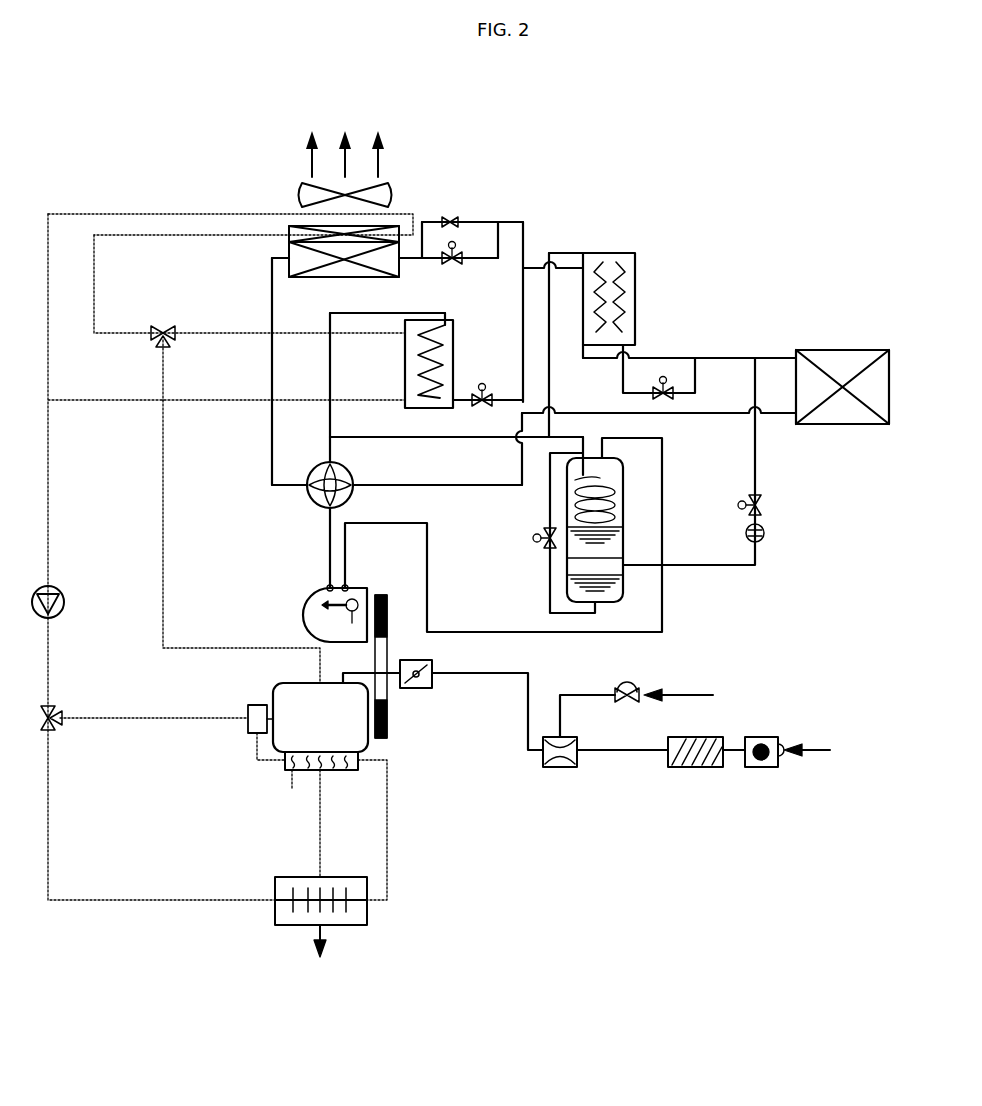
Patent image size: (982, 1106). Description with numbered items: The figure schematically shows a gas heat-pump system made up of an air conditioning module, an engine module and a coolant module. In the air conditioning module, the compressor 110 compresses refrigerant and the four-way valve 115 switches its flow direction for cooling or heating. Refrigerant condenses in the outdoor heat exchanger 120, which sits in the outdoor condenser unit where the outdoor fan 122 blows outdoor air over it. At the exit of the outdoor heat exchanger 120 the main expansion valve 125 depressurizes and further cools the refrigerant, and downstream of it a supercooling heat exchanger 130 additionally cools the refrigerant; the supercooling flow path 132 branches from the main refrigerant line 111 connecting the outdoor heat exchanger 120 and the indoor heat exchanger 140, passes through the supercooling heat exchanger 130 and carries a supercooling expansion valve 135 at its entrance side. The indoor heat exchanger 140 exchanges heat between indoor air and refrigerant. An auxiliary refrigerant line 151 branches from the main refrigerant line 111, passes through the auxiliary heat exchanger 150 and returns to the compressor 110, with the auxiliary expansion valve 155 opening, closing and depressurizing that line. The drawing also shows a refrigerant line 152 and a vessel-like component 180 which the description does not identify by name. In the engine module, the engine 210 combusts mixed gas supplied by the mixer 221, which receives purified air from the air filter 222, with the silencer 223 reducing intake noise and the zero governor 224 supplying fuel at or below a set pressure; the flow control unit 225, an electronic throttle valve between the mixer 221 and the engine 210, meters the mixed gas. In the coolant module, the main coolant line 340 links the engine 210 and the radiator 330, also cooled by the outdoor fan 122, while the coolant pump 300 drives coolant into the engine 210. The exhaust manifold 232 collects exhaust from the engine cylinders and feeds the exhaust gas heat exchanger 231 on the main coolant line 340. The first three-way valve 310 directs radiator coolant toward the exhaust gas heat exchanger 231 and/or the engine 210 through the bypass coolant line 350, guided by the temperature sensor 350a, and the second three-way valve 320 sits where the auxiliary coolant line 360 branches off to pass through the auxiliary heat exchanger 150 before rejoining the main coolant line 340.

The compressor 110 is at (362, 590).
The main refrigerant line 111 is at (523, 222).
The four-way valve 115 is at (353, 476).
The outdoor heat exchanger 120 is at (289, 258).
The outdoor fan 122 is at (300, 180).
The main expansion valve 125 is at (447, 250).
The supercooling heat exchanger 130 is at (636, 256).
The supercooling flow path 132 is at (626, 378).
The supercooling expansion valve 135 is at (676, 388).
The indoor heat exchanger 140 is at (840, 350).
The auxiliary heat exchanger 150 is at (405, 368).
The auxiliary refrigerant line 151 is at (523, 297).
The connection pipe 152 is at (272, 458).
The auxiliary expansion valve 155 is at (482, 385).
The accumulator / receiver tank 180 is at (624, 503).
The engine 210 is at (273, 692).
The mixer 221 is at (577, 766).
The air filter 222 is at (700, 768).
The silencer 223 is at (779, 742).
The zero governor 224 is at (632, 688).
The flow control unit 225 is at (432, 665).
The exhaust gas heat exchanger 231 is at (367, 905).
The exhaust manifold 232 is at (292, 790).
The coolant pump 300 is at (60, 590).
The first three-way valve 310 is at (55, 708).
The second three-way valve 320 is at (163, 326).
The radiator 330 is at (289, 228).
The main coolant line 340 is at (120, 335).
The bypass coolant line 350 is at (153, 720).
The temperature sensor 350a is at (257, 735).
The auxiliary coolant line 360 is at (222, 335).